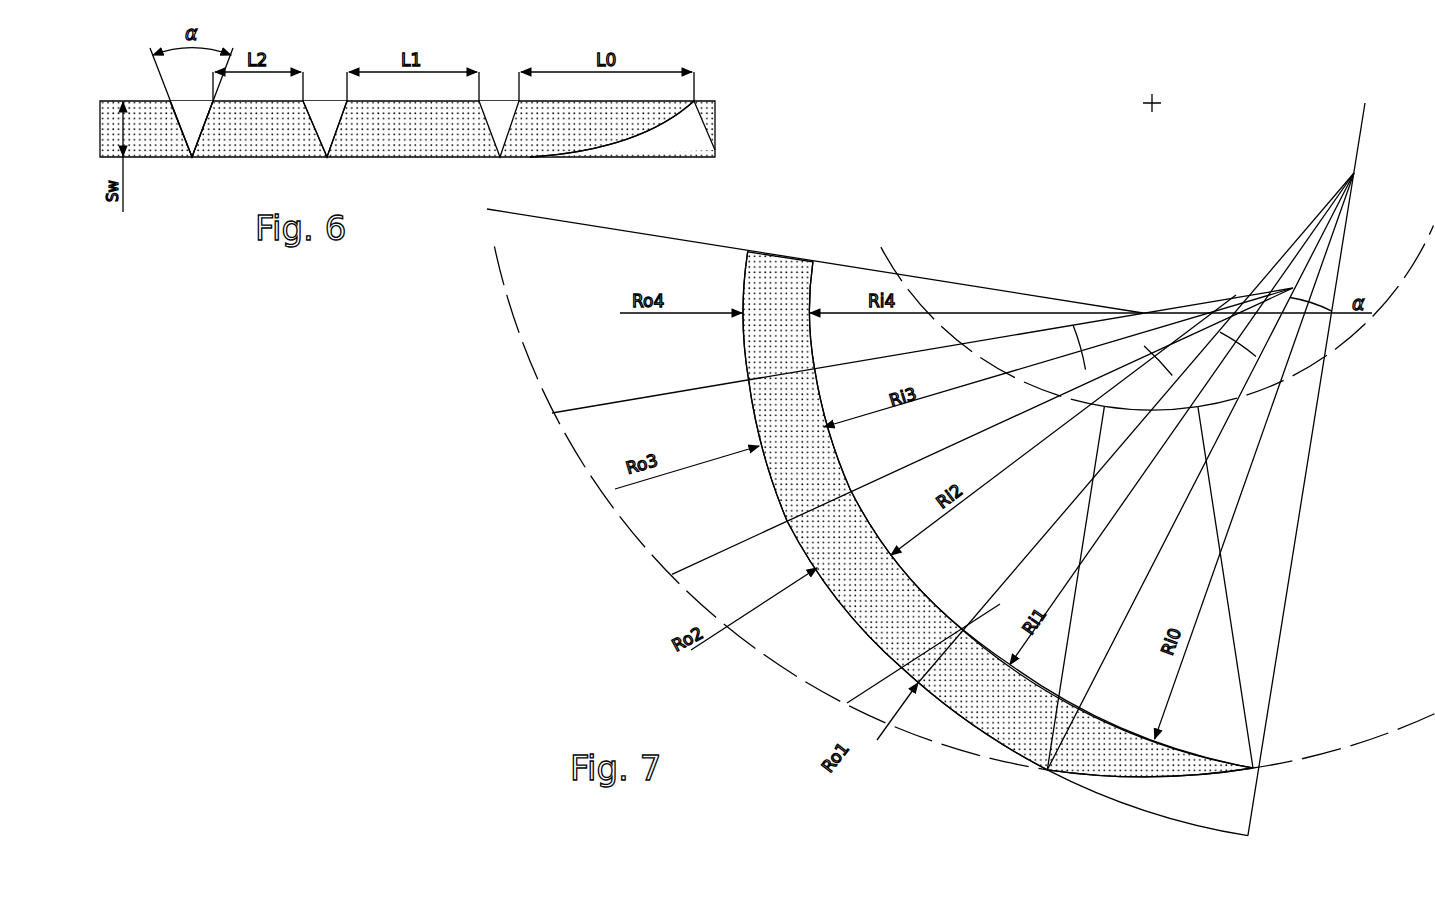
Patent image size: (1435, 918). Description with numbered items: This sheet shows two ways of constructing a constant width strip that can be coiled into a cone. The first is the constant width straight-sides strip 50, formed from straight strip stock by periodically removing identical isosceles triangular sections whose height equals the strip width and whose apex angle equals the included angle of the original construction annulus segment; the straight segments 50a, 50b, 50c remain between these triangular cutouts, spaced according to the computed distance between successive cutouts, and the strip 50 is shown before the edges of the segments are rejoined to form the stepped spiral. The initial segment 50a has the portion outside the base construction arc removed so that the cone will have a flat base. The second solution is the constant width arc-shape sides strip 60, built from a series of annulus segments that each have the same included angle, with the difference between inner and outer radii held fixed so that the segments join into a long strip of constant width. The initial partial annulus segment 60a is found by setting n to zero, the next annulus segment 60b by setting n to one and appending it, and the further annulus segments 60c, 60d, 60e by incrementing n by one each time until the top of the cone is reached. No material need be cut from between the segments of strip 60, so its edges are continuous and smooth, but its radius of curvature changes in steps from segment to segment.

In FIG. 6, the constant width straight-sides strip 50 is at (660, 138).
In FIG. 6, the initial straight segment 50a is at (563, 130).
In FIG. 6, the straight segment 50b is at (405, 137).
In FIG. 6, the straight segment 50c is at (260, 137).
In FIG. 7, the constant width arc-shape sides strip 60 is at (793, 244).
In FIG. 7, the initial partial annulus segment 60a is at (1097, 750).
In FIG. 7, the next annulus segment 60b is at (993, 700).
In FIG. 7, the further annulus segment 60c is at (873, 611).
In FIG. 7, the further annulus segment 60d is at (800, 480).
In FIG. 7, the further annulus segment 60e is at (767, 338).